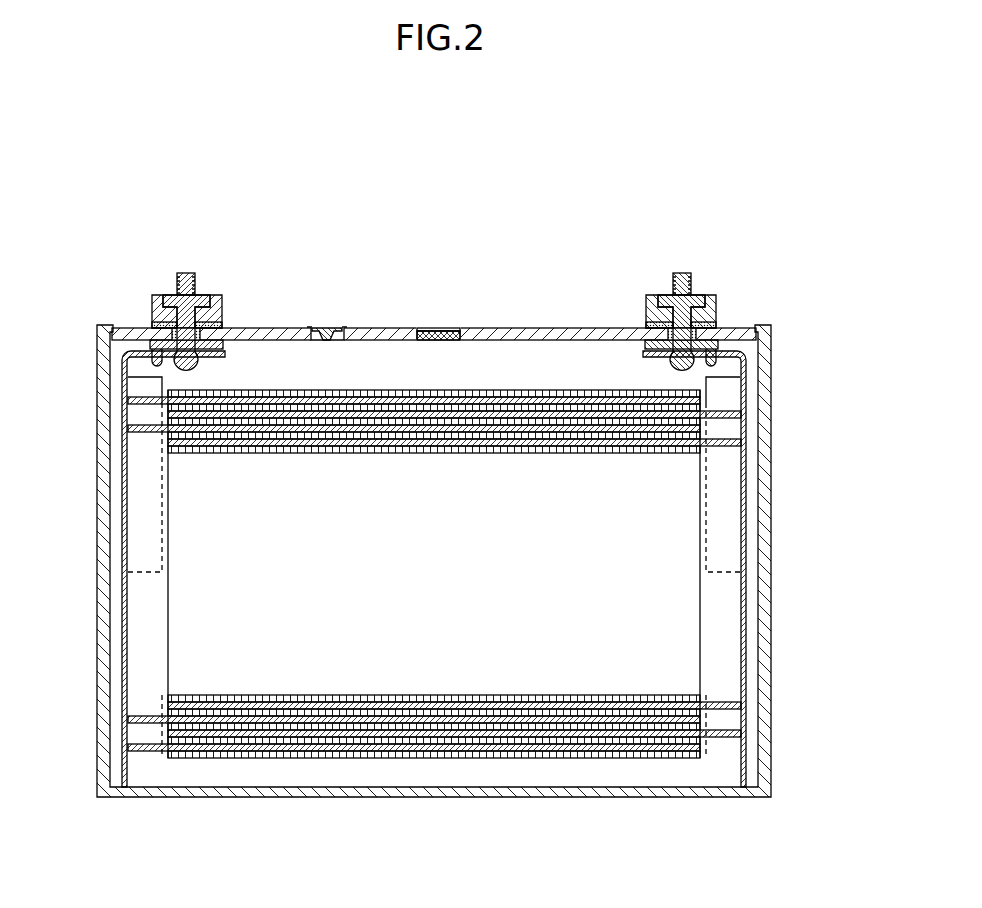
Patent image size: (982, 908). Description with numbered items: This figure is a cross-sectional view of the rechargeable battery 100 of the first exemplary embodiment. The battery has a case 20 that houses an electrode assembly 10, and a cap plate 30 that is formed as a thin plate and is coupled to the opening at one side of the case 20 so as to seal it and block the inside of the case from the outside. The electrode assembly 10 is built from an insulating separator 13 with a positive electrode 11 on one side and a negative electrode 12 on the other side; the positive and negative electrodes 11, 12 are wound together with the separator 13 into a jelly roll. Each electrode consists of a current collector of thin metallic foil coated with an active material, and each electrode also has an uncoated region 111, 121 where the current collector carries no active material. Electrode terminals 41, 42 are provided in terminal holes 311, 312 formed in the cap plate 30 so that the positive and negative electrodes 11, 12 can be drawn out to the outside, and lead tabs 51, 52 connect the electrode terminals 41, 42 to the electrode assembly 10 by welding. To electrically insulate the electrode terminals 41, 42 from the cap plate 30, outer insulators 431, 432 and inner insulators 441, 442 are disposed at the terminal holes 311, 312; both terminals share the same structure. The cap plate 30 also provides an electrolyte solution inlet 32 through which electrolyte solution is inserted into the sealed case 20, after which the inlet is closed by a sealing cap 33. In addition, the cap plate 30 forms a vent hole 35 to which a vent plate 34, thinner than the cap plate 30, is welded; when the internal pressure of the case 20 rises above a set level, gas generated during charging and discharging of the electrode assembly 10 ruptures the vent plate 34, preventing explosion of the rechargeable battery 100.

The rechargeable battery 100 is at (431, 126).
The electrode assembly 10 is at (434, 625).
The positive electrode 11 is at (262, 749).
The negative electrode 12 is at (328, 737).
The separator 13 is at (452, 726).
The uncoated region 111 is at (148, 747).
The uncoated region 121 is at (724, 734).
The case 20 is at (620, 792).
The cap plate 30 is at (517, 328).
The terminal hole 311 is at (213, 330).
The terminal hole 312 is at (667, 320).
The electrolyte solution inlet 32 is at (334, 330).
The sealing cap 33 is at (318, 329).
The vent plate 34 is at (456, 331).
The vent hole 35 is at (424, 328).
The electrode terminal 41 is at (187, 257).
The electrode terminal 42 is at (682, 257).
The outer insulator 431 is at (152, 321).
The outer insulator 432 is at (717, 324).
The inner insulator 441 is at (150, 346).
The inner insulator 442 is at (719, 346).
The lead tab 51 is at (108, 378).
The lead tab 52 is at (762, 378).